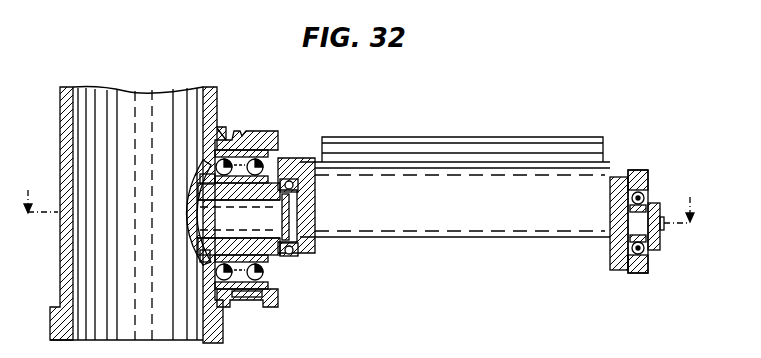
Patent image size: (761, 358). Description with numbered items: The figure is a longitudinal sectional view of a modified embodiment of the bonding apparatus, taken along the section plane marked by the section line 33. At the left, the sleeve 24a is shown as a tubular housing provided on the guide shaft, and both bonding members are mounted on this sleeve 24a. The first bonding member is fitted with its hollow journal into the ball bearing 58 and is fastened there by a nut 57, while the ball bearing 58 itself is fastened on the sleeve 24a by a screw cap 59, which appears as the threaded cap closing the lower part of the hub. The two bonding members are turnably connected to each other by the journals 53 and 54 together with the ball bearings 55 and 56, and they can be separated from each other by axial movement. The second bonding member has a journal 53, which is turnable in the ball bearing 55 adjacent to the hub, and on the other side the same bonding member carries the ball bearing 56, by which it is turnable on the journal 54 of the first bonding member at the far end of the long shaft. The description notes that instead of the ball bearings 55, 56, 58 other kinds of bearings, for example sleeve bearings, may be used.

The sleeve 24a is at (68, 120).
The section line 33 is at (369, 218).
The journal 53 is at (300, 204).
The journal 54 is at (655, 238).
The ball bearing 55 is at (289, 180).
The ball bearing 56 is at (645, 198).
The nut 57 is at (200, 256).
The ball bearing 58 is at (244, 298).
The screw cap 59 is at (279, 297).